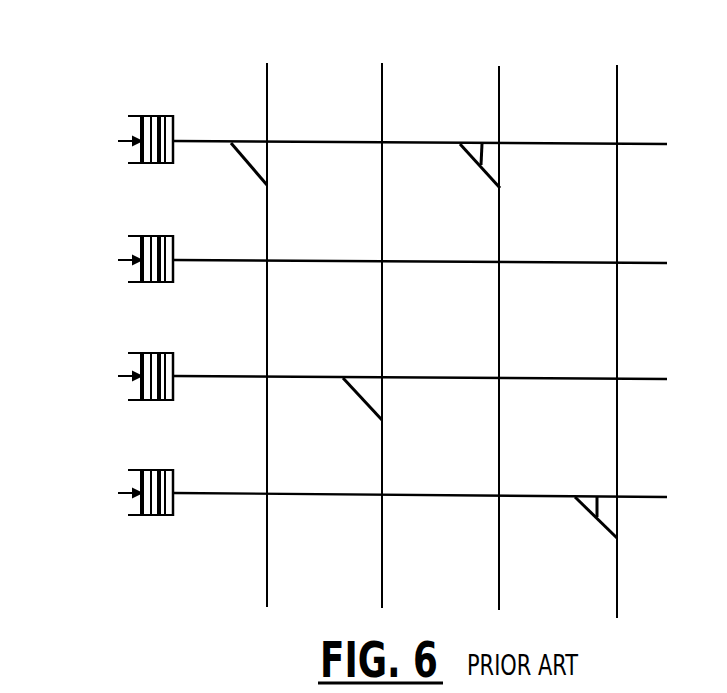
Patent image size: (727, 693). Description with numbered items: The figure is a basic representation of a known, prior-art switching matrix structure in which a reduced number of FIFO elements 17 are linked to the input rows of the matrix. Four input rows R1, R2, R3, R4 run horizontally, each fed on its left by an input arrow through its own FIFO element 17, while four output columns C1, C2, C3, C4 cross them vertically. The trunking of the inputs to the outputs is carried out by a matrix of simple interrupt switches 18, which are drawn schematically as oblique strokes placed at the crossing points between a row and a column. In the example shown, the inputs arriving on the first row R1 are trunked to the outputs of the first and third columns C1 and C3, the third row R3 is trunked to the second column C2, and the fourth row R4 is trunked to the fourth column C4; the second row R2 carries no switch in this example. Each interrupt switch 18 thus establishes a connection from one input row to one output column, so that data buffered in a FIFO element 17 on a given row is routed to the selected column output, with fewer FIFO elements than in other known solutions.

The FIFO element 17 is at (171, 122).
The interrupt switch 18 is at (481, 162).
The input row R1 is at (356, 138).
The input row R2 is at (356, 255).
The input row R3 is at (356, 373).
The input row R4 is at (356, 492).
The output column C1 is at (281, 320).
The output column C2 is at (397, 320).
The output column C3 is at (515, 321).
The output column C4 is at (632, 325).